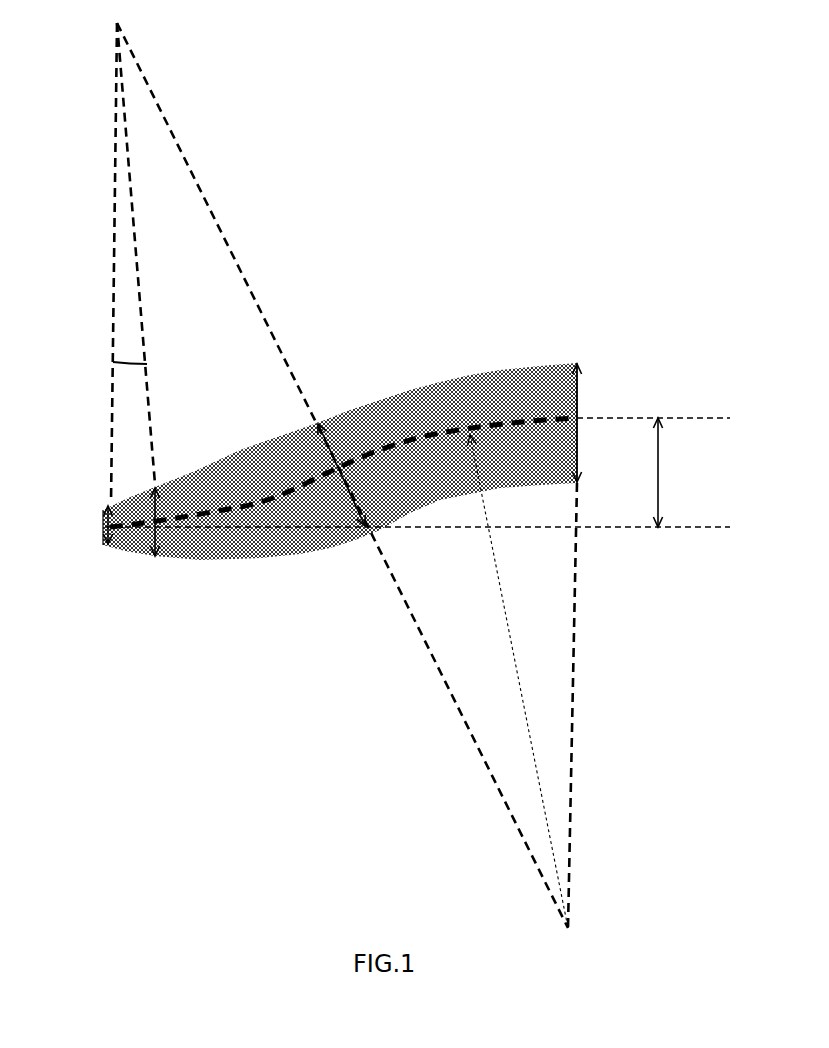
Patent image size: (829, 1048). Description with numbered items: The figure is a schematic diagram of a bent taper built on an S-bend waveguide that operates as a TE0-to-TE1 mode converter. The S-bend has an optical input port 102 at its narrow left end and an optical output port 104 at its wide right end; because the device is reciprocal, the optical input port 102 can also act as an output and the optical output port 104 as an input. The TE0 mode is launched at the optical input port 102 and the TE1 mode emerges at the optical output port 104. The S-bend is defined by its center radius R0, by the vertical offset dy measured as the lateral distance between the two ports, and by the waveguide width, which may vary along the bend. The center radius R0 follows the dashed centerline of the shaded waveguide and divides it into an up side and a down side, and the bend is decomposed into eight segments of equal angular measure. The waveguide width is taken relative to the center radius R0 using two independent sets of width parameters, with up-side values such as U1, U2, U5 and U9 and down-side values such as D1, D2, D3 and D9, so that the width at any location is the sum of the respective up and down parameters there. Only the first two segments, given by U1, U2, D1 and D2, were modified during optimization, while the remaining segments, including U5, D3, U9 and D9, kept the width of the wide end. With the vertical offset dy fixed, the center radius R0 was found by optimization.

The optical input port 102 is at (113, 532).
The optical output port 104 is at (582, 405).
The up-side width parameter at location 1 U1 is at (84, 507).
The down-side width parameter at location 1 D1 is at (88, 558).
The up-side width parameter at location 2 U2 is at (187, 512).
The down-side width parameter at location 2 D2 is at (187, 567).
The up-side width parameter at location 5 U5 is at (354, 466).
The down-side width parameter at location 3 D3 is at (390, 501).
The up-side width parameter at location 9 U9 is at (603, 415).
The down-side width parameter at location 9 D9 is at (604, 471).
The center radius R0 is at (517, 681).
The vertical offset dy is at (687, 472).